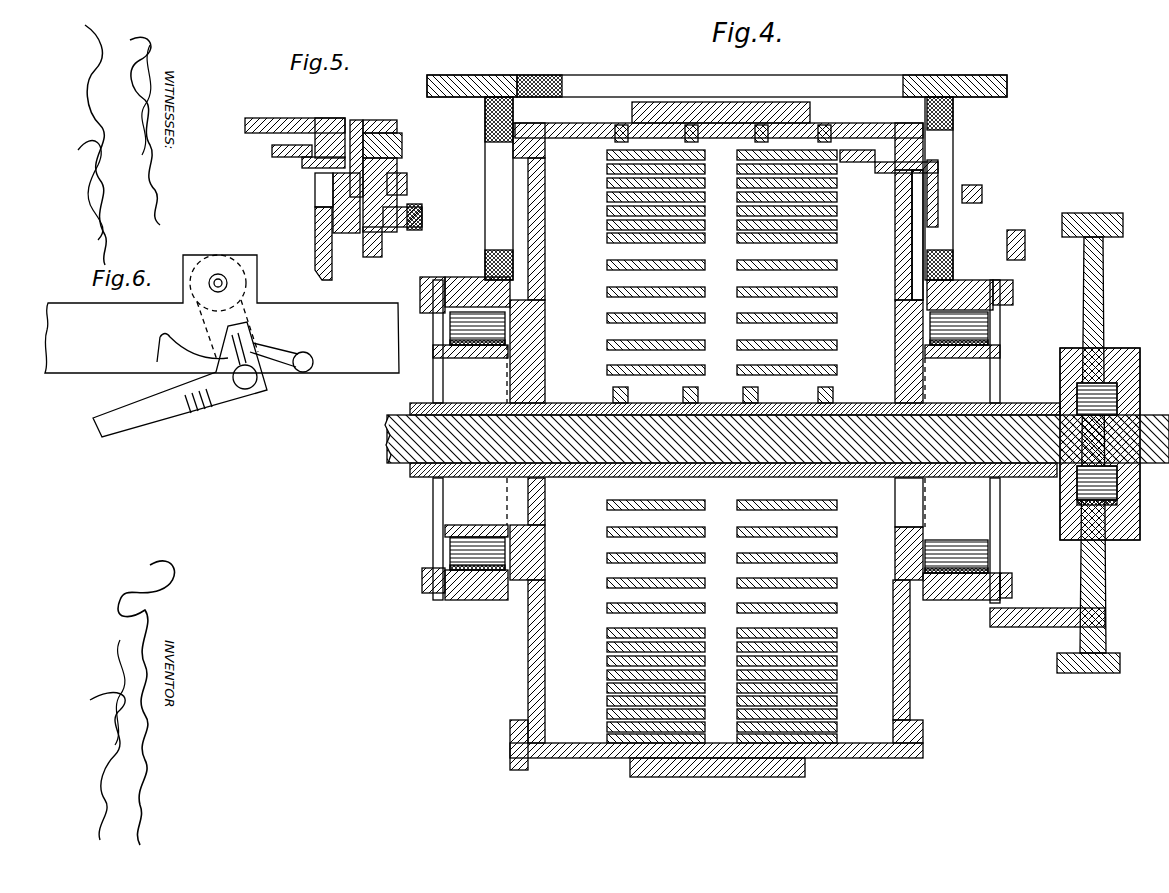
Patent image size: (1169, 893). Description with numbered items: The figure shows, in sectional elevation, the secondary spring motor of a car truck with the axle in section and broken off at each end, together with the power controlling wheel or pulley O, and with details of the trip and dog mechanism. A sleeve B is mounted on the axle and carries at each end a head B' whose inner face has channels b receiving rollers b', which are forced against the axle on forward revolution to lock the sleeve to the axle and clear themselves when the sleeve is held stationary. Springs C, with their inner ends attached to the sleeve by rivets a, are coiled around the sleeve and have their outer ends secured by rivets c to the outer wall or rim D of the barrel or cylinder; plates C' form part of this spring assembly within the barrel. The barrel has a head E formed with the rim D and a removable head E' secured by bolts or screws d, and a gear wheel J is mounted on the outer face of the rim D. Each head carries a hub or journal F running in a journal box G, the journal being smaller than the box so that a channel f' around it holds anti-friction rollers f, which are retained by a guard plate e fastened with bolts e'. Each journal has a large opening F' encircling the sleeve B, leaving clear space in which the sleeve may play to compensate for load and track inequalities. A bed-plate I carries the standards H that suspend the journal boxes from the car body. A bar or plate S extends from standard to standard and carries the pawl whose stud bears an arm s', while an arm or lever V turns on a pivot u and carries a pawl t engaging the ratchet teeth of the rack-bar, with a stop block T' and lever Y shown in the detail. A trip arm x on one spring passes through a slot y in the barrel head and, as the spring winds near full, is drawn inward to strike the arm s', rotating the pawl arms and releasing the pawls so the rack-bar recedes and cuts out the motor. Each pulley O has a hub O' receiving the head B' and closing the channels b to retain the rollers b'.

In FIG. 4, the bed-plate I is at (696, 74).
In FIG. 4, the gear wheel J is at (762, 102).
In FIG. 4, the outer wall or rim of the barrel D is at (855, 120).
In FIG. 5, the outer wall or rim of the barrel D is at (262, 118).
In FIG. 4, the supports or standards H is at (485, 130).
In FIG. 4, the removable head of the barrel E' is at (515, 433).
In FIG. 5, the removable head of the barrel E' is at (308, 243).
In FIG. 4, the head of the barrel E is at (912, 433).
In FIG. 4, the bolts or screws d is at (522, 770).
In FIG. 4, the upper plates C' is at (722, 262).
In FIG. 4, the springs C is at (722, 621).
In FIG. 5, the springs C is at (272, 155).
In FIG. 4, the rivets c is at (614, 140).
In FIG. 4, the rivets a is at (613, 390).
In FIG. 4, the head of the sleeve B' is at (735, 394).
In FIG. 4, the sleeve B is at (733, 488).
In FIG. 4, the journal boxes G is at (472, 278).
In FIG. 4, the bolts e' is at (723, 437).
In FIG. 4, the guard plate e is at (716, 441).
In FIG. 4, the hub or journal F is at (476, 517).
In FIG. 4, the anti-friction rollers f is at (718, 439).
In FIG. 4, the channel f' is at (707, 463).
In FIG. 4, the opening in the hub or journal F' is at (710, 436).
In FIG. 4, the bar or plate S is at (940, 168).
In FIG. 5, the bar or plate S is at (357, 120).
In FIG. 6, the bar or plate S is at (222, 314).
In FIG. 4, the arm or trip x is at (895, 168).
In FIG. 5, the arm or trip x is at (305, 166).
In FIG. 4, the slot y is at (912, 188).
In FIG. 5, the slot y is at (322, 196).
In FIG. 4, the stop block T' is at (984, 194).
In FIG. 5, the stop block T' is at (407, 181).
In FIG. 4, the arm or lever V is at (1047, 431).
In FIG. 4, the speed-controlling wheels or pulleys O is at (1099, 443).
In FIG. 4, the hub or center of the pulley O' is at (1112, 454).
In FIG. 4, the channels b is at (1118, 435).
In FIG. 4, the rollers b' is at (1121, 513).
In FIG. 5, the pin or pivot u is at (402, 142).
In FIG. 6, the pin or pivot u is at (228, 283).
In FIG. 5, the arm of the pawl s' is at (339, 195).
In FIG. 6, the arm of the pawl s' is at (281, 346).
In FIG. 5, the pawl t is at (405, 228).
In FIG. 6, the pawl t is at (228, 338).
In FIG. 5, the lever Y is at (372, 254).
In FIG. 6, the lever Y is at (180, 379).